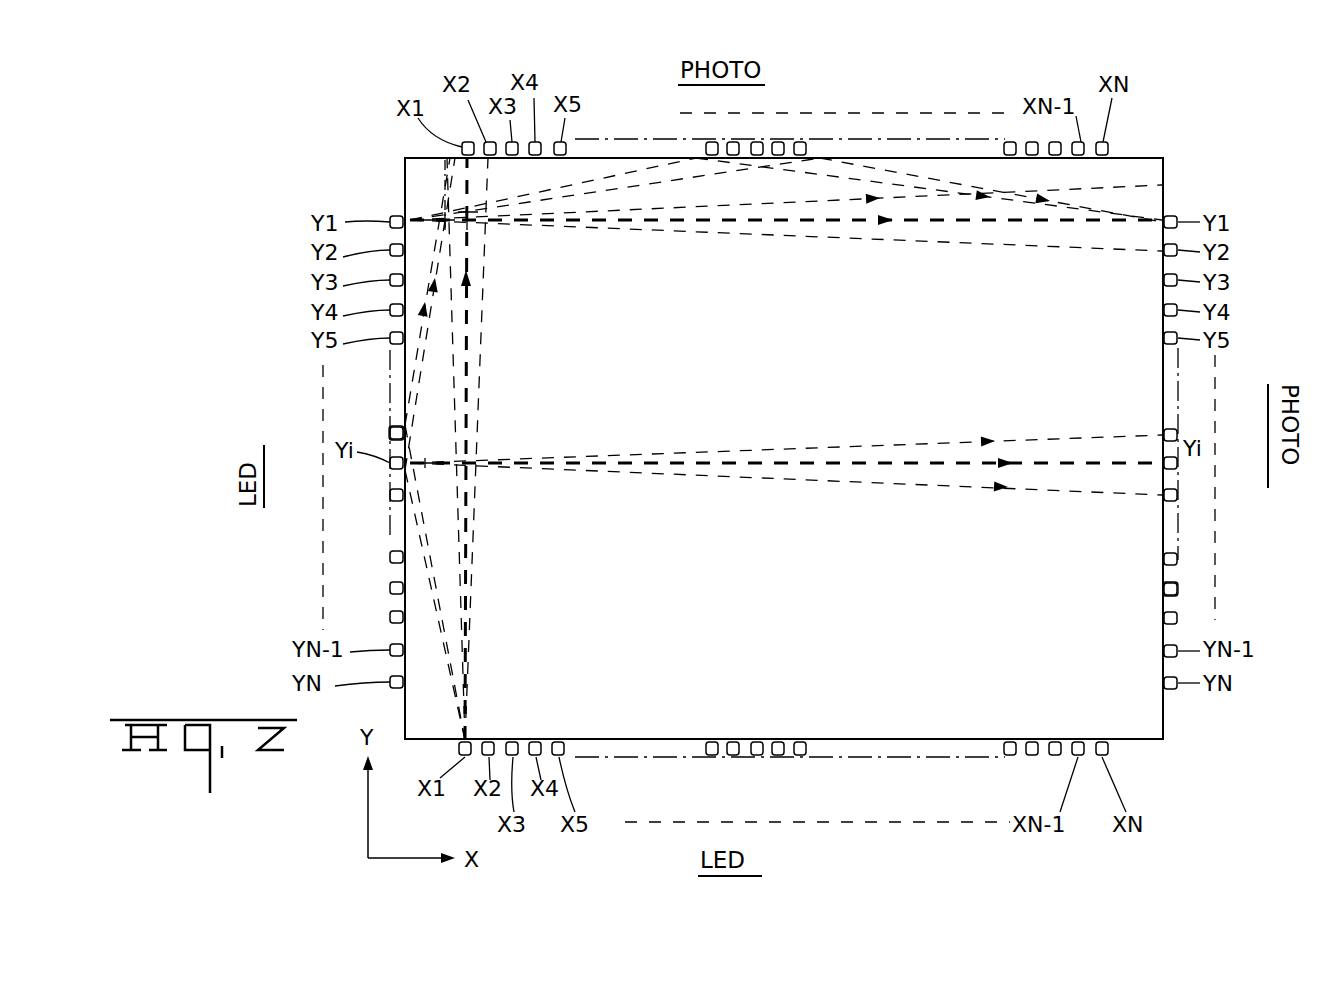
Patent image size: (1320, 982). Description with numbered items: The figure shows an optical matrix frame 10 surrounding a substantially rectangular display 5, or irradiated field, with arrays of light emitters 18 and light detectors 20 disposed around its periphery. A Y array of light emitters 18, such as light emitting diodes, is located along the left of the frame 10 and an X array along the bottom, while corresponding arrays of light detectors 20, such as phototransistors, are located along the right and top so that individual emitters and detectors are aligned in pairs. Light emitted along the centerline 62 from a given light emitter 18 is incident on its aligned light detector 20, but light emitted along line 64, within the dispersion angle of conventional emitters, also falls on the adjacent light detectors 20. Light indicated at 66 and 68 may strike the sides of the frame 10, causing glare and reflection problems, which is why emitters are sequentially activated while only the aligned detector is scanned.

The frame 10 is at (405, 160).
The display 5 is at (1165, 198).
The light emitters 18 is at (395, 437).
The light detectors 20 is at (1180, 590).
The centerline 62 is at (470, 388).
The line 64 is at (476, 420).
The light 66 is at (410, 488).
The light 68 is at (405, 531).